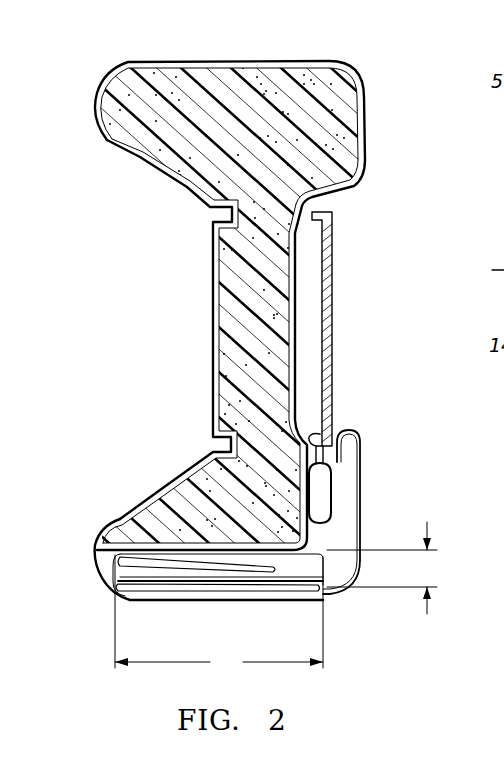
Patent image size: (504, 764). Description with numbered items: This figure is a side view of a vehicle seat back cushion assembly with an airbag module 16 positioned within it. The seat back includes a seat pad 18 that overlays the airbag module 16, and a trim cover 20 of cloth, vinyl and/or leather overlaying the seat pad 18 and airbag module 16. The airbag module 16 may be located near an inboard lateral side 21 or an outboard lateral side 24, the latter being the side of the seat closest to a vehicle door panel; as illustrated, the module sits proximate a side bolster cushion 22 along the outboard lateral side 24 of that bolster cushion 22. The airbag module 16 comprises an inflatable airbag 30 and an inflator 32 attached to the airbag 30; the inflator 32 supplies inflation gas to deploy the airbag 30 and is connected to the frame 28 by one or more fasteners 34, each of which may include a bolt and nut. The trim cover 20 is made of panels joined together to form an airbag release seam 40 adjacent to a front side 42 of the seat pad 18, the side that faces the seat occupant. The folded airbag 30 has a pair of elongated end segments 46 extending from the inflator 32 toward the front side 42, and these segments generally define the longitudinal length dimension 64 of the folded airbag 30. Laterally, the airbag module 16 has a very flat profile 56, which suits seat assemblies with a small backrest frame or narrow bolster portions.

The airbag module 16 is at (233, 585).
The seat pad 18 is at (243, 317).
The trim cover 20 is at (219, 377).
The inboard lateral side 21 is at (175, 75).
The side bolster cushion 22 is at (198, 150).
The outboard lateral side 24 is at (163, 598).
The frame 28 is at (333, 347).
The inflatable airbag 30 is at (190, 572).
The inflator 32 is at (318, 493).
The fasteners 34 is at (320, 458).
The airbag release seam 40 is at (101, 577).
The front side 42 is at (90, 110).
The elongated end segments 46 is at (308, 558).
The flat profile 56 is at (383, 568).
The longitudinal length dimension 64 is at (219, 614).